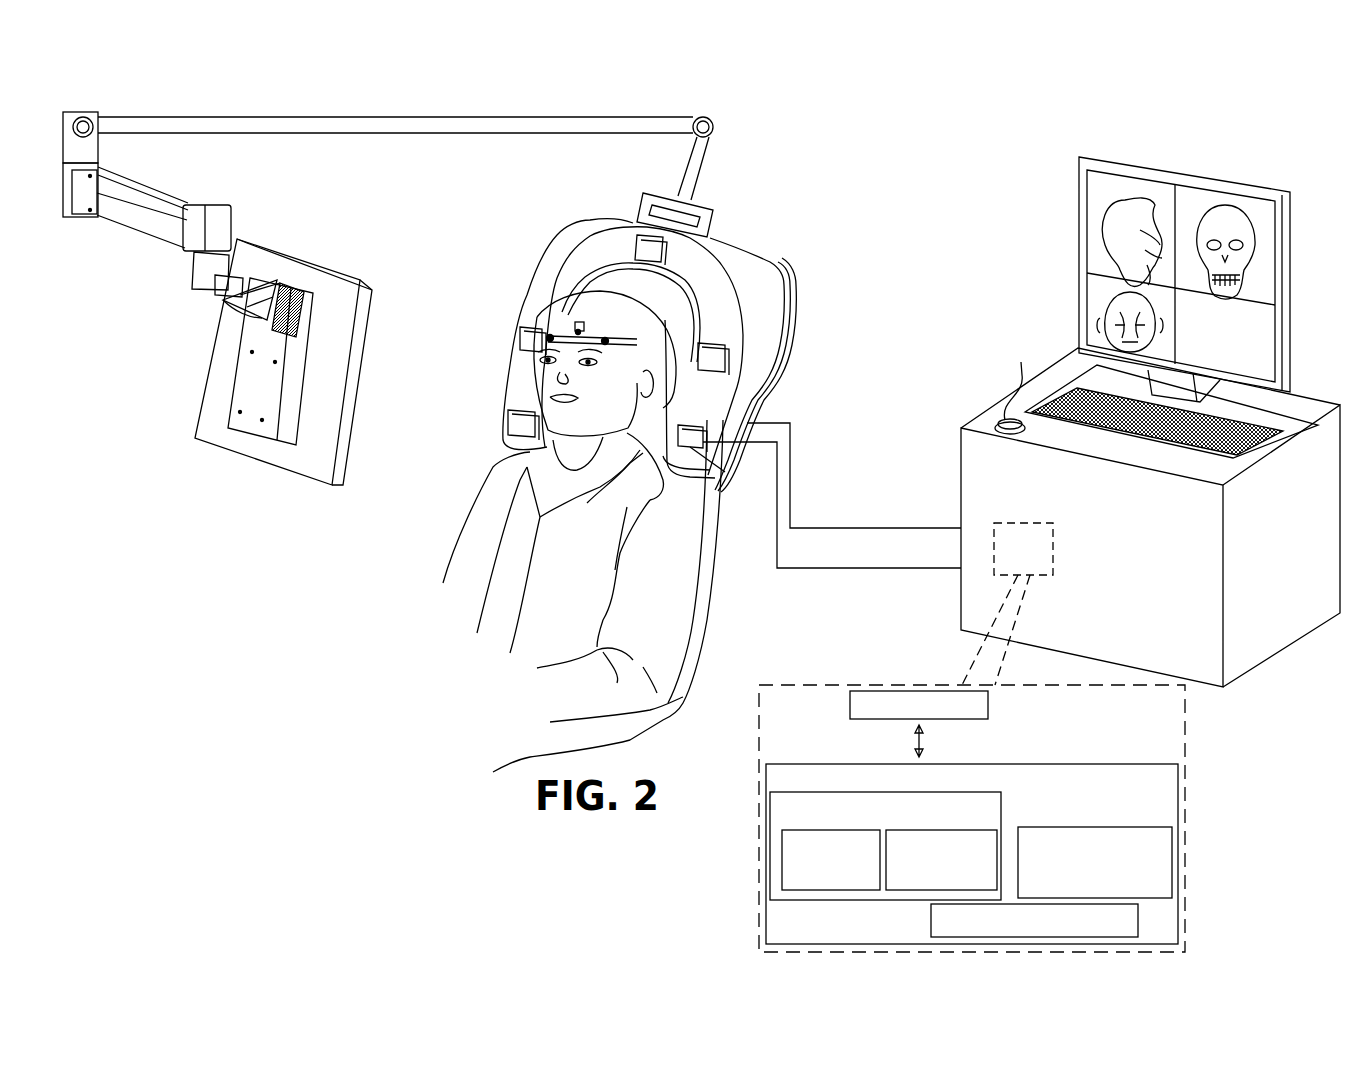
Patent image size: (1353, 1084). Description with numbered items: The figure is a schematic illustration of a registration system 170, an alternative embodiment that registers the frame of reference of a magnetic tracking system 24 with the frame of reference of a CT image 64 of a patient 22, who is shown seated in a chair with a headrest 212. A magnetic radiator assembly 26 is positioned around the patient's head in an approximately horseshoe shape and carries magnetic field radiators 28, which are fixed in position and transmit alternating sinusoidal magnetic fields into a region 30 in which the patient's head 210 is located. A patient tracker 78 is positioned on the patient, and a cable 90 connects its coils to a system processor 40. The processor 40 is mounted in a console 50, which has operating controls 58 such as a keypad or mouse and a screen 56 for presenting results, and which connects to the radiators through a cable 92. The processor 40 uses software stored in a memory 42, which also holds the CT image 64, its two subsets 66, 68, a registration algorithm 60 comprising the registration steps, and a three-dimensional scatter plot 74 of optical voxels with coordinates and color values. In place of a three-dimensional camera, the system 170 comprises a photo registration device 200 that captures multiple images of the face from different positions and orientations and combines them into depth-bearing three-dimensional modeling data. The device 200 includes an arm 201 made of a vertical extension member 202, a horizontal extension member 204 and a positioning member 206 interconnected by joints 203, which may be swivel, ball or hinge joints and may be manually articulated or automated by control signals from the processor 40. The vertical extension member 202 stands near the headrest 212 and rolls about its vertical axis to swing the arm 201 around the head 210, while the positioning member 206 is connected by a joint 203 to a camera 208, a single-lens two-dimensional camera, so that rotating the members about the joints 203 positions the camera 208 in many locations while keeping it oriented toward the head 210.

The photo registration device 200 is at (742, 102).
The arm 201 is at (588, 97).
The vertical extension member 202 is at (694, 176).
The joints 203 is at (88, 120).
The horizontal extension member 204 is at (323, 133).
The positioning member 206 is at (132, 223).
The camera 208 is at (250, 453).
The registration system 170 is at (815, 242).
The magnetic tracking system 24 is at (590, 233).
The magnetic radiator assembly 26 is at (752, 322).
The magnetic field radiators 28 is at (660, 255).
The region 30 is at (495, 290).
The patient tracker 78 is at (565, 262).
The head 210 is at (725, 350).
The headrest 212 is at (778, 270).
The patient 22 is at (480, 527).
The cable 90 is at (795, 447).
The cable 92 is at (797, 572).
The console 50 is at (1285, 660).
The screen 56 is at (1280, 285).
The operating controls 58 is at (1016, 383).
The system processor 40 is at (990, 712).
The memory 42 is at (762, 902).
The CT image 64 is at (796, 790).
The subset of image 66 is at (802, 830).
The subset of image 68 is at (975, 830).
The registration algorithm 60 is at (1121, 827).
The 3D scatter plot 74 is at (931, 919).